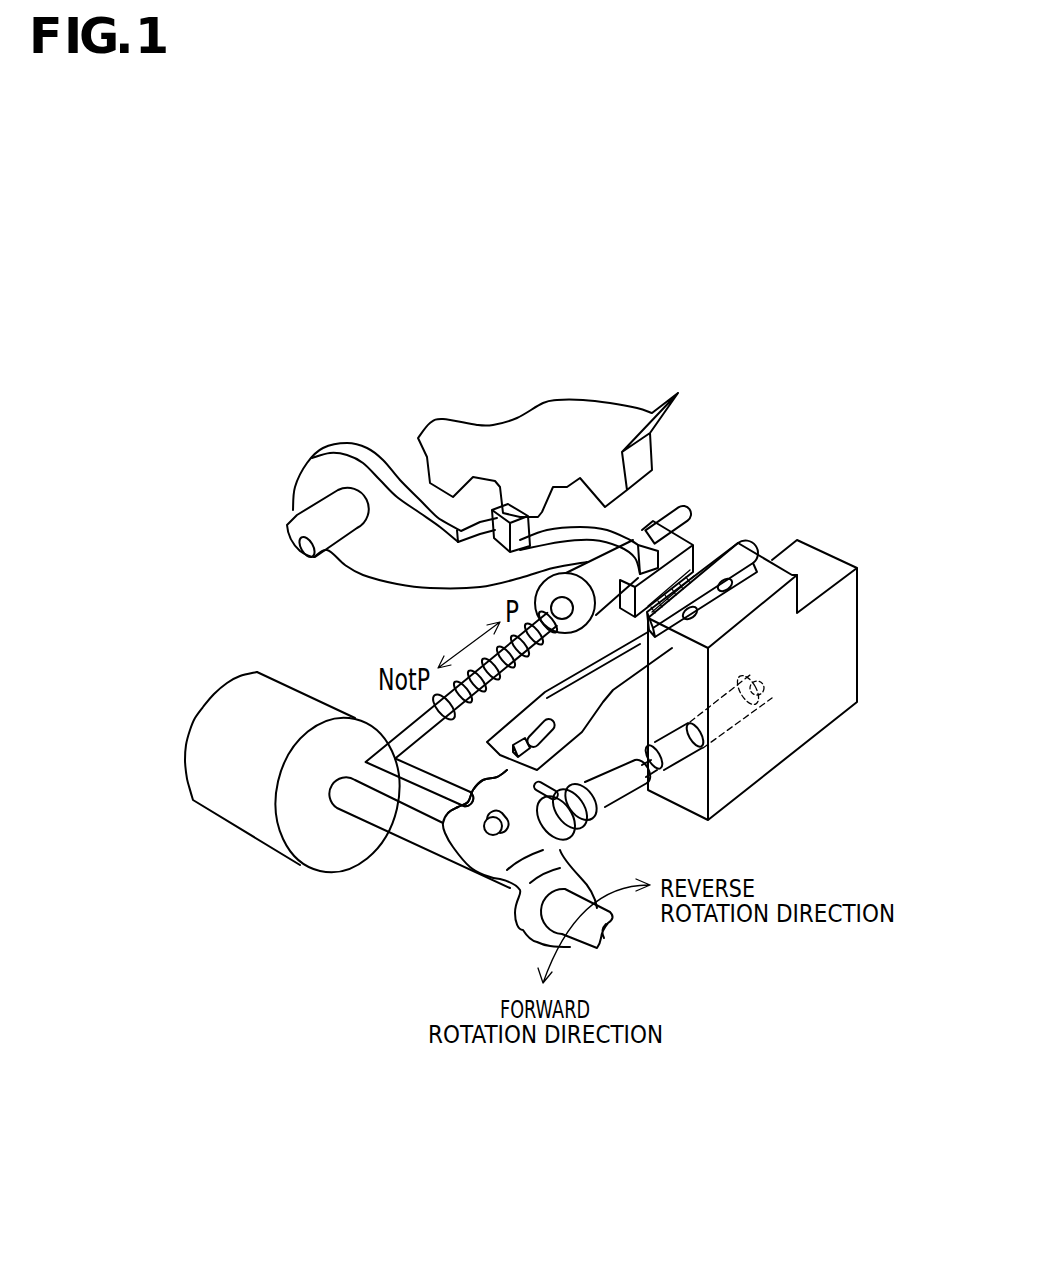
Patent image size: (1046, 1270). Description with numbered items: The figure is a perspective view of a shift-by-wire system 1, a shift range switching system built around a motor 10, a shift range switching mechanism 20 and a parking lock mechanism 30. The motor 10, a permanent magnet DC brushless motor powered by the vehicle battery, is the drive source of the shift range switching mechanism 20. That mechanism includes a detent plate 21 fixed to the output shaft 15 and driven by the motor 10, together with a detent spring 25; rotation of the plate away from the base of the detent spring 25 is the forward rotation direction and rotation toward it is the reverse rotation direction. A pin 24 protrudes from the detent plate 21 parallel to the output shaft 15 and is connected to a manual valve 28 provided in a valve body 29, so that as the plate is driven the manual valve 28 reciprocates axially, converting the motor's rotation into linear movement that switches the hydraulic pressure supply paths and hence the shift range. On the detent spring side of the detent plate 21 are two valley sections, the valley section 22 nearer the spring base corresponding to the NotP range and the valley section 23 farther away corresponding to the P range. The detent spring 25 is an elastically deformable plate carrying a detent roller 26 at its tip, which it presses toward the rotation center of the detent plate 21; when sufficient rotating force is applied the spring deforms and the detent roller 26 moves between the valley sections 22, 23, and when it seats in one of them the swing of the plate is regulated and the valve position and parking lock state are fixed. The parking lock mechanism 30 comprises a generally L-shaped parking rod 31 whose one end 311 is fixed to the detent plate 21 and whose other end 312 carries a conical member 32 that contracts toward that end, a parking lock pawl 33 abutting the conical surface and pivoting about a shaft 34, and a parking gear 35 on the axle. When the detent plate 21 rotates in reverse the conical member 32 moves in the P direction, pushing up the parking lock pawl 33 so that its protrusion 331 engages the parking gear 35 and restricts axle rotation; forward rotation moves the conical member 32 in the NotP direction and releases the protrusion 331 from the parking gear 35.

The shift-by-wire system 1 is at (273, 1048).
The motor 10 is at (212, 786).
The output shaft 15 is at (431, 847).
The shift range switching mechanism 20 is at (626, 956).
The detent plate 21 is at (477, 847).
The valley section 22 is at (503, 768).
The valley section 23 is at (447, 802).
The pin 24 is at (553, 782).
The detent spring 25 is at (573, 703).
The detent roller 26 is at (527, 733).
The manual valve 28 is at (618, 788).
The valve body 29 is at (757, 767).
The parking lock mechanism 30 is at (620, 366).
The parking rod 31 is at (406, 730).
The one end 311 is at (502, 834).
The other end 312 is at (684, 514).
The conical member 32 is at (603, 580).
The parking lock pawl 33 is at (388, 547).
The protrusion 331 is at (502, 513).
The shaft 34 is at (302, 538).
The parking gear 35 is at (568, 414).